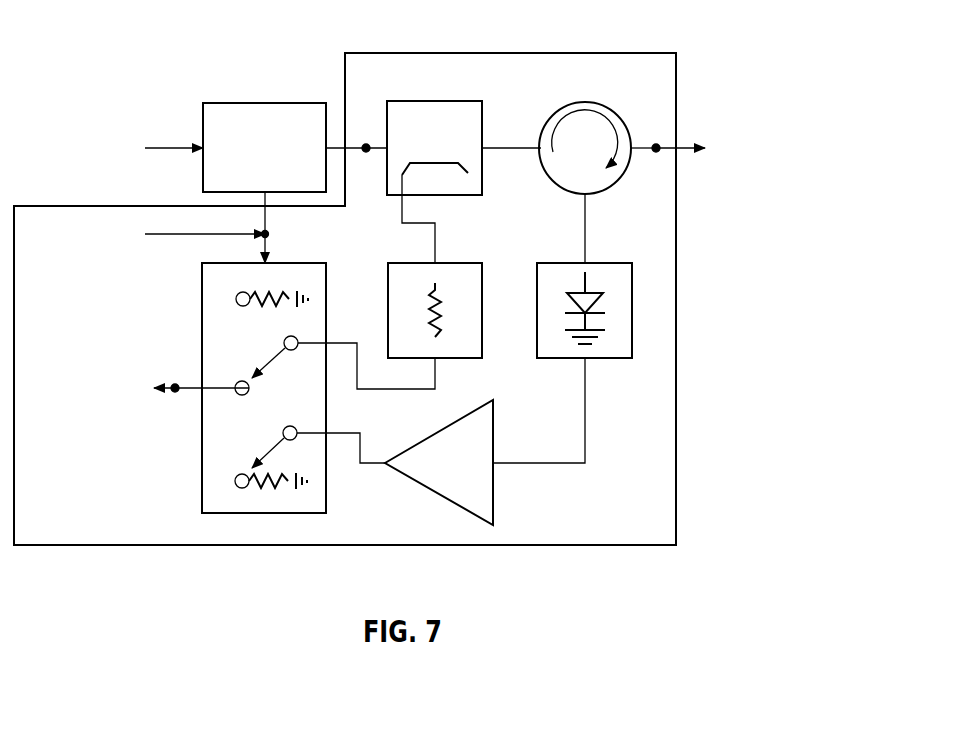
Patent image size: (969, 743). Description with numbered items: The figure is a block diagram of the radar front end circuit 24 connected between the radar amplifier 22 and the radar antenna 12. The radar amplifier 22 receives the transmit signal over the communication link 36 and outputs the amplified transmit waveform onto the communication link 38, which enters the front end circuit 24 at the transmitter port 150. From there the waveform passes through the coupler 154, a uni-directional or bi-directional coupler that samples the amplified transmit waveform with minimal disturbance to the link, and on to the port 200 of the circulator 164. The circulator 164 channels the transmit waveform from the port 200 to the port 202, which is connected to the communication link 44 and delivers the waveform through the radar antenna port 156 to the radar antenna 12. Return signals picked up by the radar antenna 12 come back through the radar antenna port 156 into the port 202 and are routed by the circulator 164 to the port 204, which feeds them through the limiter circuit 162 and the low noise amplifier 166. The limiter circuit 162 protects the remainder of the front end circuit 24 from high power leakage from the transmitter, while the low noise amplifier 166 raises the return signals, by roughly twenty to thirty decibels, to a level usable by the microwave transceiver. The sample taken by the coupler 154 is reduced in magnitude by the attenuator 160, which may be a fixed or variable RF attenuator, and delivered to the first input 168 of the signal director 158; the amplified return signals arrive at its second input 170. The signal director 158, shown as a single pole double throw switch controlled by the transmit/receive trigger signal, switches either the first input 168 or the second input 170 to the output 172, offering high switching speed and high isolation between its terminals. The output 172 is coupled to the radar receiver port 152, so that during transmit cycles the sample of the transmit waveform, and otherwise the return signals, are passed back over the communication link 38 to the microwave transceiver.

The radar antenna 12 is at (757, 137).
The radar amplifier 22 is at (233, 103).
The front end circuit 24 is at (150, 548).
The communication link 36 is at (163, 146).
The communication link 38 is at (337, 148).
The communication link 44 is at (690, 146).
The transmitter port 150 is at (366, 150).
The radar receiver port 152 is at (175, 392).
The coupler 154 is at (421, 101).
The radar antenna port 156 is at (656, 152).
The signal director 158 is at (200, 490).
The attenuator 160 is at (421, 263).
The limiter circuit 162 is at (600, 360).
The circulator 164 is at (585, 101).
The low noise amplifier 166 is at (497, 500).
The first input 168 is at (316, 343).
The second input 170 is at (315, 437).
The output 172 is at (213, 388).
The port 200 is at (540, 148).
The port 202 is at (632, 148).
The port 204 is at (581, 196).